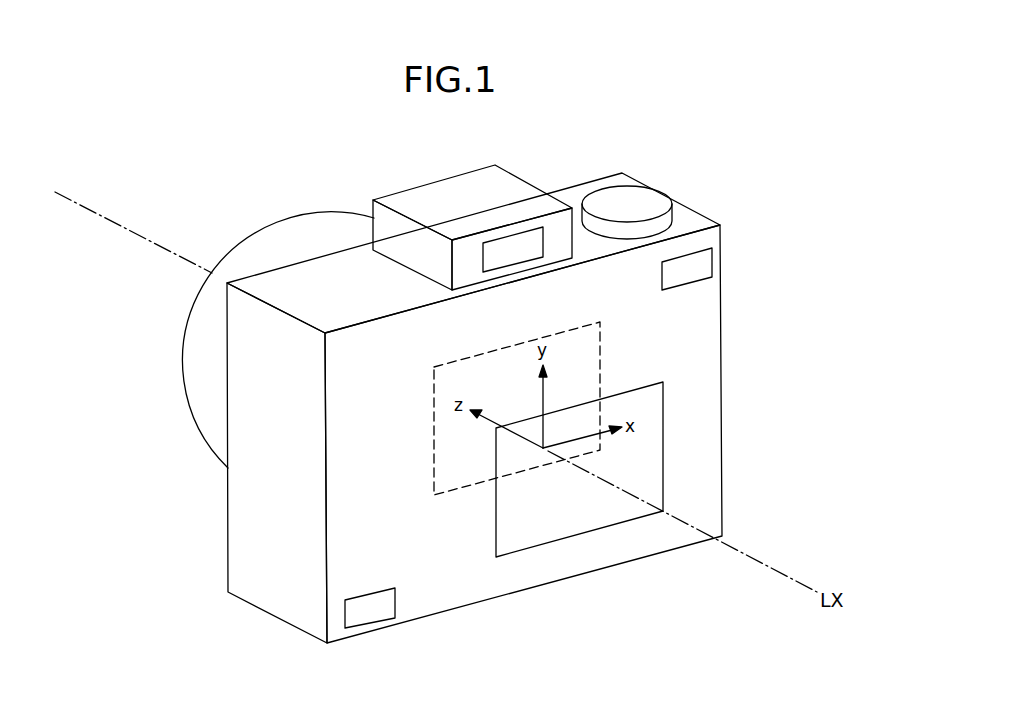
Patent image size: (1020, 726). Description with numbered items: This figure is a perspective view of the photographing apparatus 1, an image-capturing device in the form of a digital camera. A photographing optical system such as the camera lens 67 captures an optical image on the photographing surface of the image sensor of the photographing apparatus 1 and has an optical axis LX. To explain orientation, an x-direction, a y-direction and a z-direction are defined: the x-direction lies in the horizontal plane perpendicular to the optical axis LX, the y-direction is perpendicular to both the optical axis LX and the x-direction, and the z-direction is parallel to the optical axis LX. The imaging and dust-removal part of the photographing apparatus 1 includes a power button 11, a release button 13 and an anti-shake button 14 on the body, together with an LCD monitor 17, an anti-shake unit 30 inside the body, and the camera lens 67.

The photographing apparatus 1 is at (600, 178).
The power button 11 is at (717, 262).
The release button 13 is at (662, 187).
The anti-shake button 14 is at (366, 623).
The LCD monitor 17 is at (637, 389).
The anti-shake unit 30 is at (577, 327).
The camera lens 67 is at (327, 205).